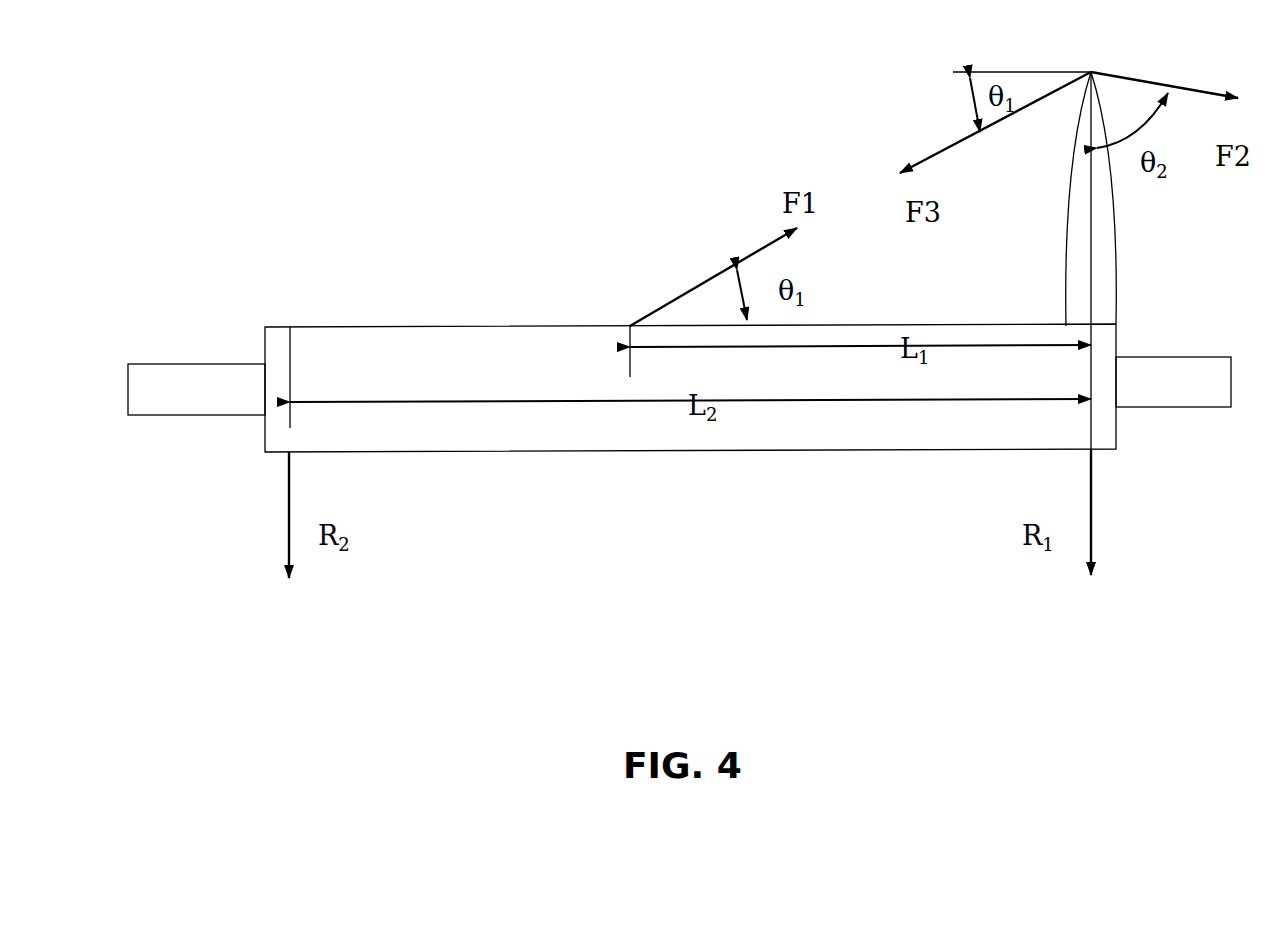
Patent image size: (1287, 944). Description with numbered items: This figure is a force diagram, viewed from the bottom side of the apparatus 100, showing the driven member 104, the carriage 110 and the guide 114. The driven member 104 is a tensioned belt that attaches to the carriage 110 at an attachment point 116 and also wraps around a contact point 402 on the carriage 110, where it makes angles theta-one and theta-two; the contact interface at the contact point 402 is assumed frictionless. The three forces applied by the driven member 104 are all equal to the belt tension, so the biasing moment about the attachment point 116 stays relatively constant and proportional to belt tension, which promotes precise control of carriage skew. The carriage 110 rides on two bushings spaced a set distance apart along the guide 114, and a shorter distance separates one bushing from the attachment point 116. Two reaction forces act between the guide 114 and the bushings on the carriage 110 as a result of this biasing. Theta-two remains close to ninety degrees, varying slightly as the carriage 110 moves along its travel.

The apparatus 100 is at (803, 765).
The driven member 104 is at (907, 109).
The carriage 110 is at (690, 439).
The guide 114 is at (243, 260).
The attachment point 116 is at (630, 326).
The contact point 402 is at (1087, 70).